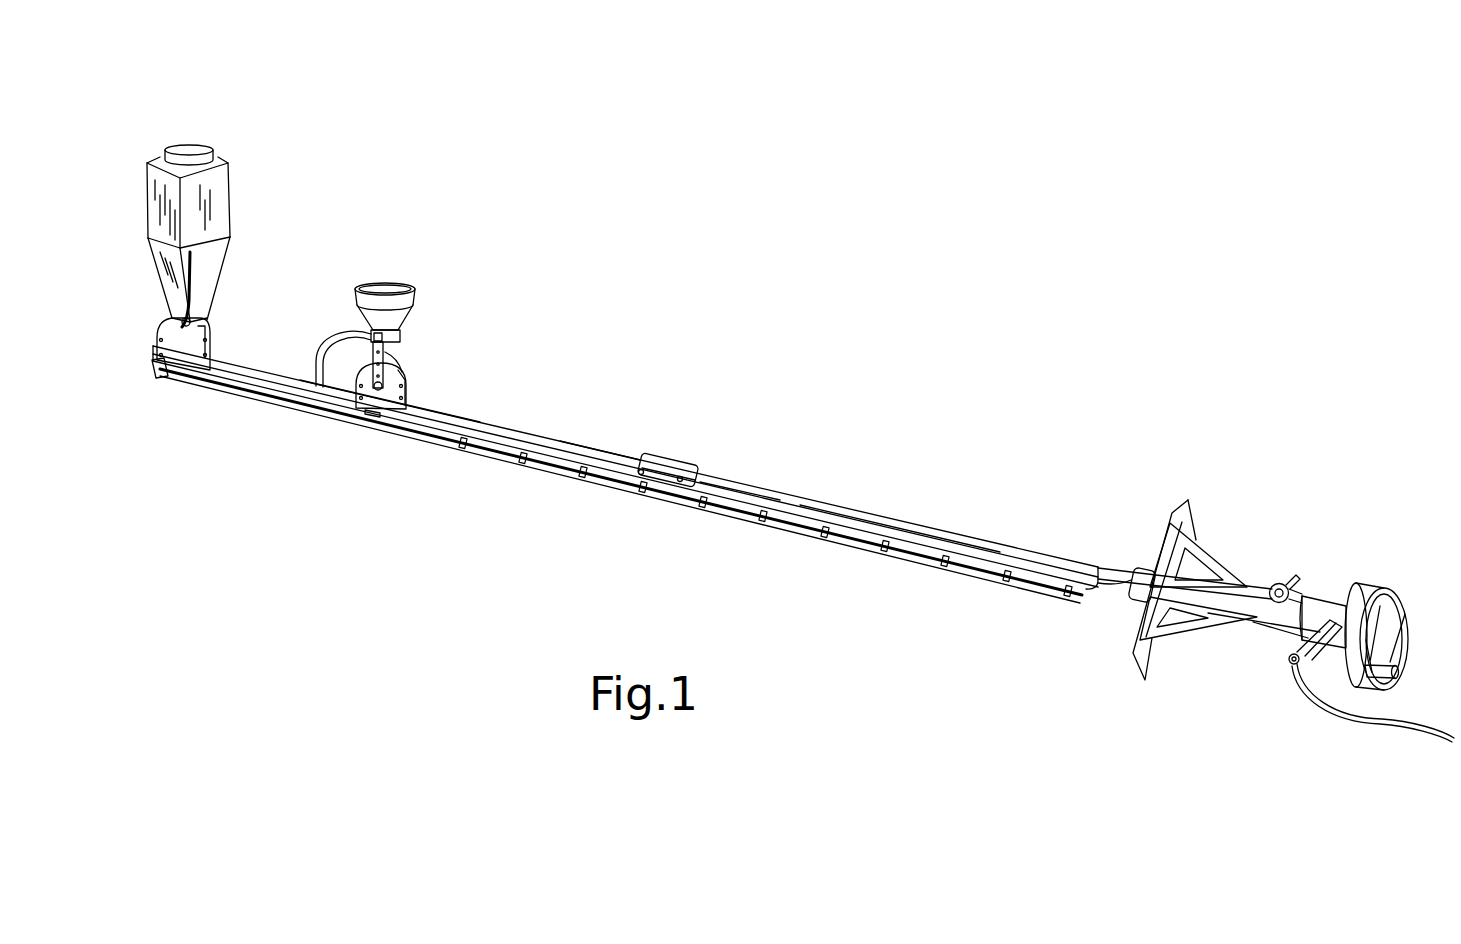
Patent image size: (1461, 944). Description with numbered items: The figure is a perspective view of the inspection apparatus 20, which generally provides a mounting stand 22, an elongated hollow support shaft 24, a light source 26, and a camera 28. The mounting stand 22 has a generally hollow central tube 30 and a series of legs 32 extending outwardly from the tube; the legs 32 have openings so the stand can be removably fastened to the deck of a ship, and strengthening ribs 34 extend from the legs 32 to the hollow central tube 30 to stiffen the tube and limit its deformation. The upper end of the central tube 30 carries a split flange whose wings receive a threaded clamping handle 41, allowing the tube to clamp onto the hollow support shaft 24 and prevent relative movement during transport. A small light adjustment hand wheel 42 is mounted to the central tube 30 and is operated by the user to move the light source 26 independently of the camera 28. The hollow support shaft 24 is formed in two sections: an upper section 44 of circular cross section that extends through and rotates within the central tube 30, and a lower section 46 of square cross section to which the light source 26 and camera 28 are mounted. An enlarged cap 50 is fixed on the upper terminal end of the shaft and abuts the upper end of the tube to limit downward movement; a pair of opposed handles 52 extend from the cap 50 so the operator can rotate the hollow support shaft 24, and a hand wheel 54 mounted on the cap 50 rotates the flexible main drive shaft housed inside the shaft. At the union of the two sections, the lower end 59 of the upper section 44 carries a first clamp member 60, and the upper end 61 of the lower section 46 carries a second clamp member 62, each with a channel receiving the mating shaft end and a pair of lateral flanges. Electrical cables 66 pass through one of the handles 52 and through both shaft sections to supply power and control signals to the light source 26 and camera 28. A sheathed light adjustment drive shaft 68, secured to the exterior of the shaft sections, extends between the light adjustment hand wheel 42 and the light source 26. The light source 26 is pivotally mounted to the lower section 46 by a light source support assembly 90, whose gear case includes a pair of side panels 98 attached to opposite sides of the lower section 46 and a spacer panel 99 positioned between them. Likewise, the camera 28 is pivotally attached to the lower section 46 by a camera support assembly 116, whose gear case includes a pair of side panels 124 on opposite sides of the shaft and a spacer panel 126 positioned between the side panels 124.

The inspection apparatus 20 is at (840, 399).
The mounting stand 22 is at (1162, 701).
The elongated hollow support shaft 24 is at (704, 530).
The light source 26 is at (389, 266).
The camera 28 is at (240, 160).
The hollow central tube 30 is at (1322, 598).
The legs 32 is at (1187, 497).
The strengthening ribs 34 is at (1208, 626).
The threaded clamping handle 41 is at (1312, 673).
The light adjustment hand wheel 42 is at (1279, 578).
The upper section 44 is at (880, 507).
The lower section 46 is at (490, 422).
The enlarged cap 50 is at (1362, 591).
The opposed handles 52 is at (1292, 668).
The hand wheel 54 is at (1405, 644).
The lower end 59 is at (705, 482).
The first clamp member 60 is at (668, 458).
The upper end 61 is at (592, 440).
The second clamp member 62 is at (660, 482).
The electrical cables 66 is at (1378, 724).
The sheathed light adjustment drive shaft 68 is at (334, 334).
The light source support assembly 90 is at (421, 351).
The side panels 98 is at (372, 408).
The spacer panel 99 is at (409, 387).
The camera support assembly 116 is at (154, 326).
The side panels 124 is at (172, 362).
The spacer panel 126 is at (212, 346).